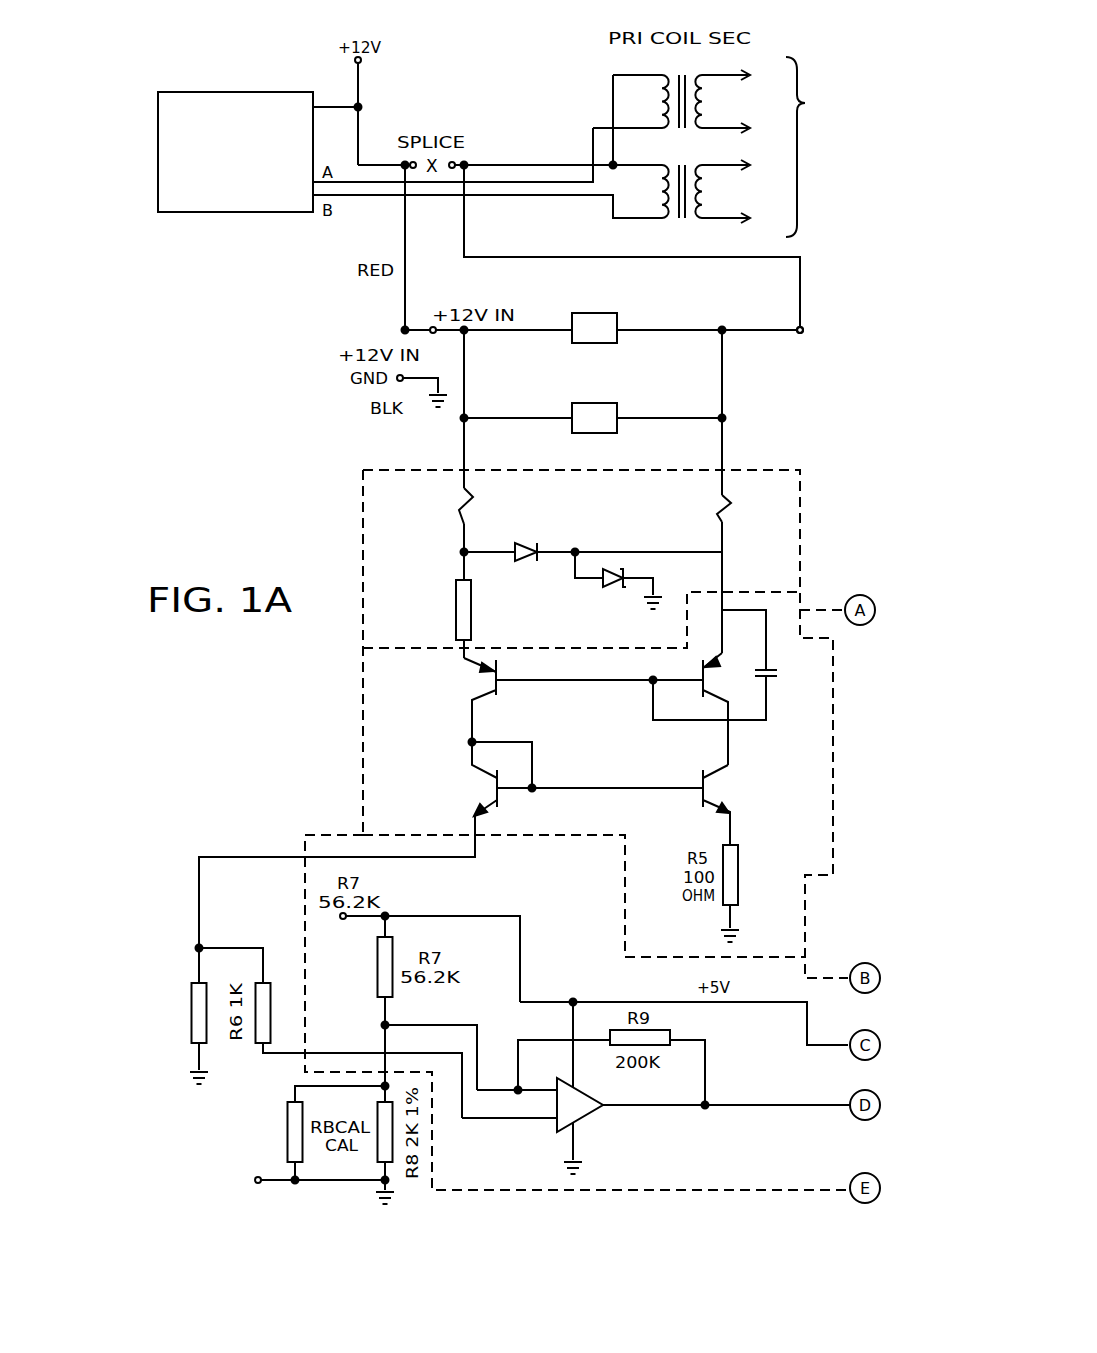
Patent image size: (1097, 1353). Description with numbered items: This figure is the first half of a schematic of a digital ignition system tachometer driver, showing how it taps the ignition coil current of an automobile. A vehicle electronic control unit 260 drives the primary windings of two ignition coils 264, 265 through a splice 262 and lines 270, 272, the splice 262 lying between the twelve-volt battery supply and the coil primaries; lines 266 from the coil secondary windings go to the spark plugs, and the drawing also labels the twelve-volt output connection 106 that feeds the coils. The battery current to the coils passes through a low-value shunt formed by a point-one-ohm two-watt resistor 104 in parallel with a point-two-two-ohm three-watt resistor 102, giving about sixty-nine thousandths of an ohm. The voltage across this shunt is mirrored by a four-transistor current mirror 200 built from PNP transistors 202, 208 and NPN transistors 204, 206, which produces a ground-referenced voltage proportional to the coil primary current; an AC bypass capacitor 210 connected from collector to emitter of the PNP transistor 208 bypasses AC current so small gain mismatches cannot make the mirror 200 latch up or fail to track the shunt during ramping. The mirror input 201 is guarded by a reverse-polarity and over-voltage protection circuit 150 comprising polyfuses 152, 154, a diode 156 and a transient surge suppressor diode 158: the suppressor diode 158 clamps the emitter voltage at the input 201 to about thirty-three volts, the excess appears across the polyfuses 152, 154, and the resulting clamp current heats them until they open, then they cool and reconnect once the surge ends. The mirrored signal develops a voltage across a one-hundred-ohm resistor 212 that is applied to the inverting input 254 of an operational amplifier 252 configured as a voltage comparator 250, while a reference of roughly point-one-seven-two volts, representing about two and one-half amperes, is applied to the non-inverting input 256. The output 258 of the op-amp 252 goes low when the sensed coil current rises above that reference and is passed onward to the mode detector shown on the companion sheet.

The vehicle electronic control unit 260 is at (205, 212).
The splice 262 is at (592, 74).
The ignition coil 264 is at (588, 125).
The ignition coil 265 is at (590, 222).
The lines 266 is at (806, 103).
The line 270 is at (350, 183).
The line 272 is at (370, 197).
The 0.22 ohm three-watt resistor 102 is at (572, 313).
The 0.1 ohm two-watt resistor 104 is at (572, 403).
The +12V output connection 106 is at (785, 325).
The reverse-polarity and over-voltage protection circuit 150 is at (775, 553).
The polyfuse 152 is at (445, 482).
The polyfuse 154 is at (720, 502).
The diode 156 is at (530, 562).
The transient surge suppressor diode 158 is at (625, 575).
The current mirror 200 is at (387, 818).
The current mirror input 201 is at (460, 652).
The PNP transistor 202 is at (480, 678).
The NPN transistor 204 is at (523, 757).
The NPN transistor 206 is at (725, 790).
The PNP transistor 208 is at (717, 697).
The AC bypass capacitor 210 is at (773, 655).
The 100-ohm resistor 212 is at (203, 983).
The voltage comparator 250 is at (463, 1193).
The operational amplifier 252 is at (607, 1088).
The inverting input pin 254 is at (505, 1122).
The non-inverting input 256 is at (530, 1088).
The output 258 is at (658, 1102).